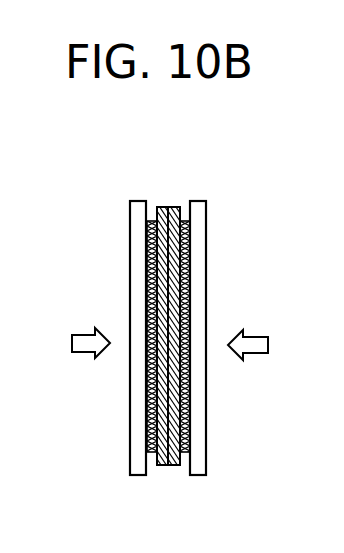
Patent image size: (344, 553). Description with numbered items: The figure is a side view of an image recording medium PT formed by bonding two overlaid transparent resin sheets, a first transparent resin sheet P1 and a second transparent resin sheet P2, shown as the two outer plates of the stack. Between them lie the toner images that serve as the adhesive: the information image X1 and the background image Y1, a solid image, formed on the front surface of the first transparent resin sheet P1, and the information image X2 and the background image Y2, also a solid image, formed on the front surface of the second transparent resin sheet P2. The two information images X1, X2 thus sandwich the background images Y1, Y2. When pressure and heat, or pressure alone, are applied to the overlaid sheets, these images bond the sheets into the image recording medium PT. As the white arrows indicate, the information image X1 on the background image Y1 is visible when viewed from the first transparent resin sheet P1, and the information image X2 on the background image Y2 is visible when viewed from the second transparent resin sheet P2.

The image recording medium PT is at (122, 270).
The first transparent resin sheet P1 is at (167, 187).
The second transparent resin sheet P2 is at (210, 187).
The information image X1 is at (153, 408).
The background image Y1 is at (163, 378).
The information image X2 is at (183, 287).
The background image Y2 is at (177, 268).